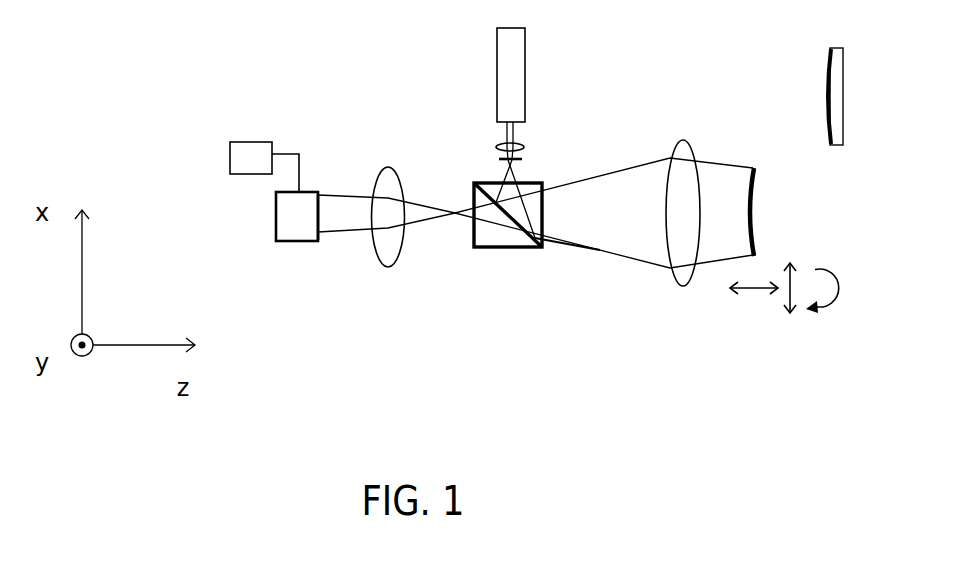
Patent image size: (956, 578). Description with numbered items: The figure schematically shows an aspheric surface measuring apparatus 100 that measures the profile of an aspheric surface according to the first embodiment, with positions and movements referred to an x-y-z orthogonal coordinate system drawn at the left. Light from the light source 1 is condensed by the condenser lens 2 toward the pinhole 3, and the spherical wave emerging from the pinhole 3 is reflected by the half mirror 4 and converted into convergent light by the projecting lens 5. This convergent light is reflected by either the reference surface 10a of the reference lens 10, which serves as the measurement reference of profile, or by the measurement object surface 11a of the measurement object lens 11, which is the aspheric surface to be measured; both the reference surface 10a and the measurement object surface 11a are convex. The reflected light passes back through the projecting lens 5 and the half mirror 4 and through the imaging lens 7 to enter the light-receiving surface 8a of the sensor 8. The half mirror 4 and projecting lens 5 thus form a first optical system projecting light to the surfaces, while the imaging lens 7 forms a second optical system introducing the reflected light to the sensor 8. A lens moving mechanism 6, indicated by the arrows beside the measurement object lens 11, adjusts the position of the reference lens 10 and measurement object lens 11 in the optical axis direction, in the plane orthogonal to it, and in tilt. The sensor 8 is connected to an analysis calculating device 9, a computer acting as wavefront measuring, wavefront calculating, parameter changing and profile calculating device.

The aspheric surface measuring apparatus 100 is at (147, 35).
The light source 1 is at (494, 87).
The condenser lens 2 is at (494, 146).
The pinhole 3 is at (499, 195).
The half mirror 4 is at (508, 235).
The projecting lens 5 is at (683, 193).
The lens moving mechanism 6 is at (770, 308).
The imaging lens 7 is at (388, 197).
The light-receiving sensor 8 is at (280, 216).
The light-receiving surface 8a is at (318, 235).
The analysis calculating device 9 is at (250, 167).
The reference lens 10 is at (851, 77).
The reference surface 10a is at (830, 67).
The measurement object lens 11 is at (767, 192).
The measurement object surface 11a is at (753, 168).